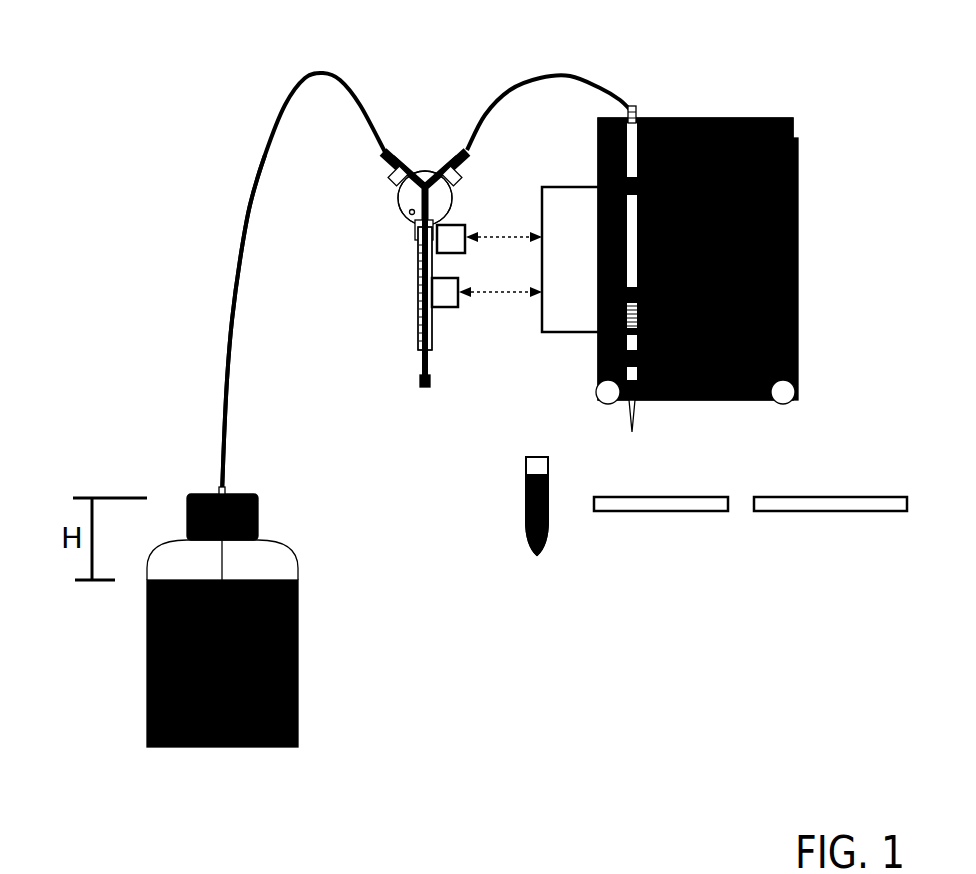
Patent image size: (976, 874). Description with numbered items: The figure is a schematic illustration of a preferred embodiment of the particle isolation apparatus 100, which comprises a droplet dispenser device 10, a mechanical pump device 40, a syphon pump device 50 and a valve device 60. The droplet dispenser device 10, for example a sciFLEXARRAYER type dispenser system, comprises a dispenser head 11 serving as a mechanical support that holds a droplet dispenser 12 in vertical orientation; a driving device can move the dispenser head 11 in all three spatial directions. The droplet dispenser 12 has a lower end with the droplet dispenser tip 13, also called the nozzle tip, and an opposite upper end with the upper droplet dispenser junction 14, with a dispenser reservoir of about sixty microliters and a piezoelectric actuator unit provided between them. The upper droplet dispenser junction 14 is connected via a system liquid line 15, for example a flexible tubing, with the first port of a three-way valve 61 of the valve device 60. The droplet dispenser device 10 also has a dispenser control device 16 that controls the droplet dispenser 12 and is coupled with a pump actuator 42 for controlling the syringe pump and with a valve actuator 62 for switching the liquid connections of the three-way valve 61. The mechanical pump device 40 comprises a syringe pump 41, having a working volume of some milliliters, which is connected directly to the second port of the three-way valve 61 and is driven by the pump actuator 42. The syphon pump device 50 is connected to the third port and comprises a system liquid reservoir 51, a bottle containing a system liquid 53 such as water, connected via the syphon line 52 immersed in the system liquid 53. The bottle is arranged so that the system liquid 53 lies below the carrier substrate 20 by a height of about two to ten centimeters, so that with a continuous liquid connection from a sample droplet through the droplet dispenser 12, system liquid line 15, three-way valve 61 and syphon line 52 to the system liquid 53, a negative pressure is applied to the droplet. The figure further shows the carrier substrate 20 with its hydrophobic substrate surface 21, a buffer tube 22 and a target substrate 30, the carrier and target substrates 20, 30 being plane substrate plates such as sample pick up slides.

The particle isolation apparatus 100 is at (112, 125).
The syphon pump device 50 is at (130, 77).
The syphon line 52 is at (226, 338).
The system liquid reservoir 51 is at (298, 676).
The system liquid 53 is at (222, 663).
The valve device 60 is at (358, 147).
The three-way valve 61 is at (432, 172).
The system liquid line 15 is at (583, 77).
The mechanical pump device 40 is at (358, 235).
The syringe pump 41 is at (420, 330).
The valve actuator 62 is at (465, 224).
The pump actuator 42 is at (447, 307).
The dispenser control device 16 is at (571, 259).
The droplet dispenser device 10 is at (872, 93).
The dispenser head 11 is at (723, 118).
The droplet dispenser 12 is at (637, 258).
The upper droplet dispenser junction 14 is at (637, 110).
The droplet dispenser tip 13 is at (632, 430).
The buffer tube 22 is at (526, 525).
The carrier substrate 20 is at (650, 511).
The hydrophobic substrate surface 21 is at (650, 497).
The target substrate 30 is at (810, 503).